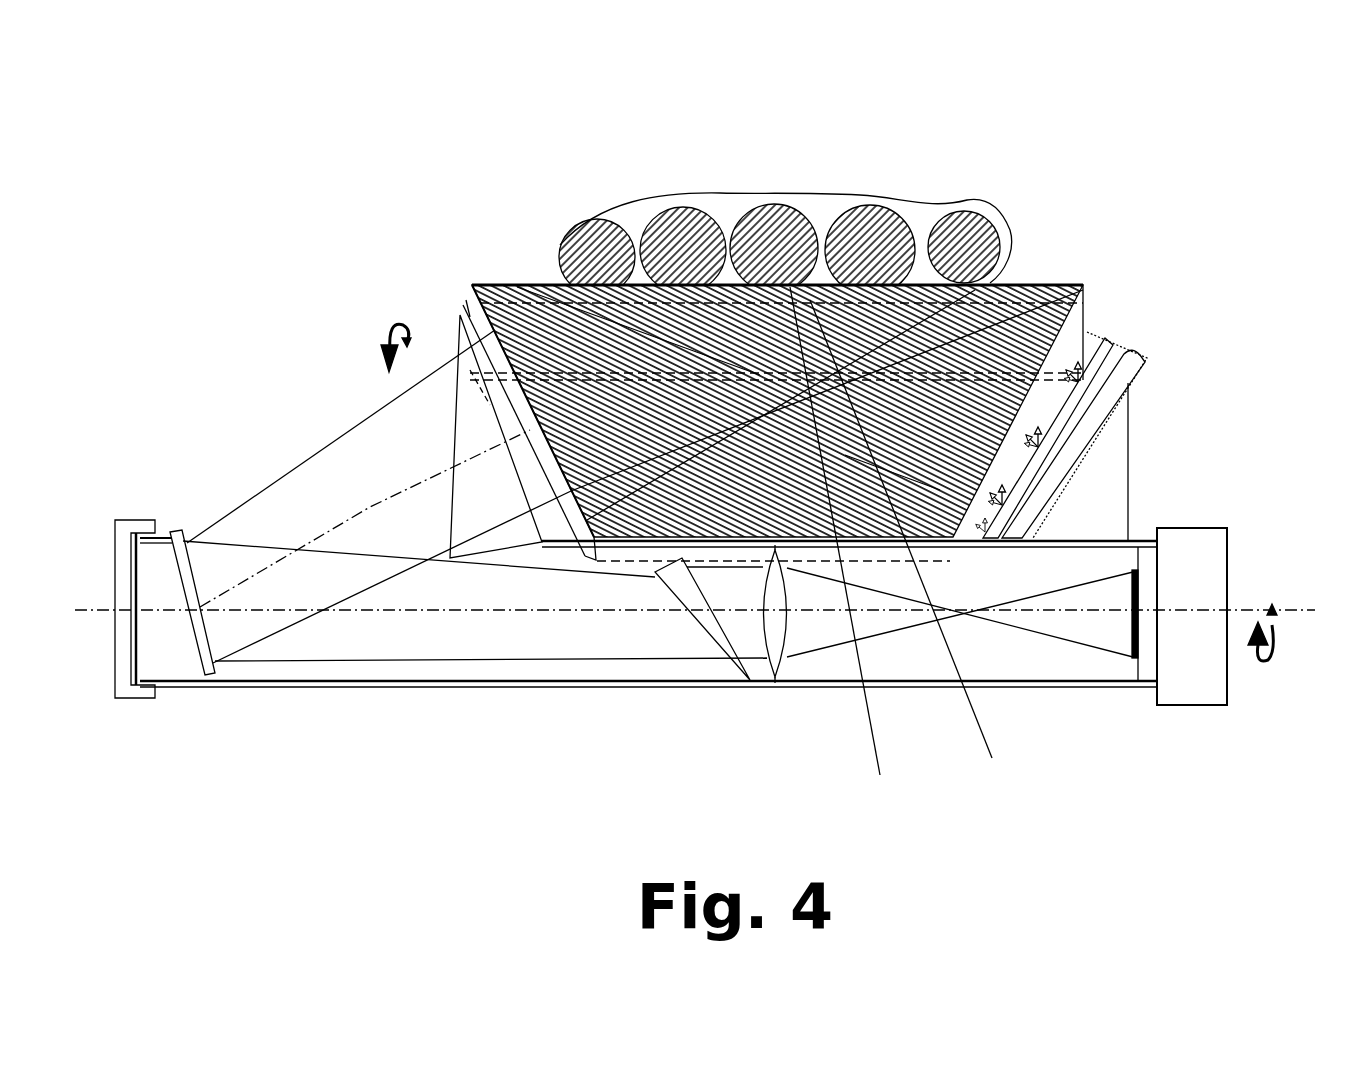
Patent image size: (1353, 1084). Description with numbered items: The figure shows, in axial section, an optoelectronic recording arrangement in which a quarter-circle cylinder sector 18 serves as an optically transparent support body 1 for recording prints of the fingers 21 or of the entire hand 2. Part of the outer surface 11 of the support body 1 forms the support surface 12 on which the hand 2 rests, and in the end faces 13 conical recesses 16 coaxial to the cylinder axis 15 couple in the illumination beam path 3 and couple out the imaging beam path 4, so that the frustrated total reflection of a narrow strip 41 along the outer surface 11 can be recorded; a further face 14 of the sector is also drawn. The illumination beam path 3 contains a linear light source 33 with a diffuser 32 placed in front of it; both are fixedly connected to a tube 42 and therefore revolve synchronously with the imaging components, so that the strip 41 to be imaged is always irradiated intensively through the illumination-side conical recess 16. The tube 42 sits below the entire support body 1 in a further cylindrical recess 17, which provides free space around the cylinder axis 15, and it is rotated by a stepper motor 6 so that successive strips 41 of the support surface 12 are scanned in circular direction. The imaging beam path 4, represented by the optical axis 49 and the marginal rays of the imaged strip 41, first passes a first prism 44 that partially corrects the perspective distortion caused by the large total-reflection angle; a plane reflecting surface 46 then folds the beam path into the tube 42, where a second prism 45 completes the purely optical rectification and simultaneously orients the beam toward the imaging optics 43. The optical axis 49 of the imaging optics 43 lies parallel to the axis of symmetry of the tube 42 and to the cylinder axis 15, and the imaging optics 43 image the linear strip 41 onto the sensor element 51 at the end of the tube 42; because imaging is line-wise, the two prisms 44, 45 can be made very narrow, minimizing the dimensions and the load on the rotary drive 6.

The support body 1 is at (493, 280).
The hand 2 is at (720, 200).
The illumination beam path 3 is at (1087, 287).
The imaging beam path 4 is at (327, 437).
The stepper motor 6 is at (1207, 673).
The outer surface 11 is at (514, 278).
The support surface 12 is at (1027, 280).
The end faces 13 is at (1090, 300).
The entrance face 14 is at (472, 285).
The cylinder axis 15 is at (1240, 617).
The conical recess 16 is at (543, 452).
The cylindrical recess 17 is at (917, 559).
The cylinder sector 18 is at (462, 298).
The fingers 21 is at (810, 223).
The diffuser 32 is at (1135, 355).
The linear light source 33 is at (1080, 443).
The strip 41 is at (842, 553).
The tube 42 is at (325, 685).
The imaging optics 43 is at (773, 648).
The first prism 44 is at (460, 425).
The second prism 45 is at (717, 633).
The plane reflecting surface 46 is at (207, 650).
The optical axis 49 is at (328, 527).
The image sensor 51 is at (1135, 658).